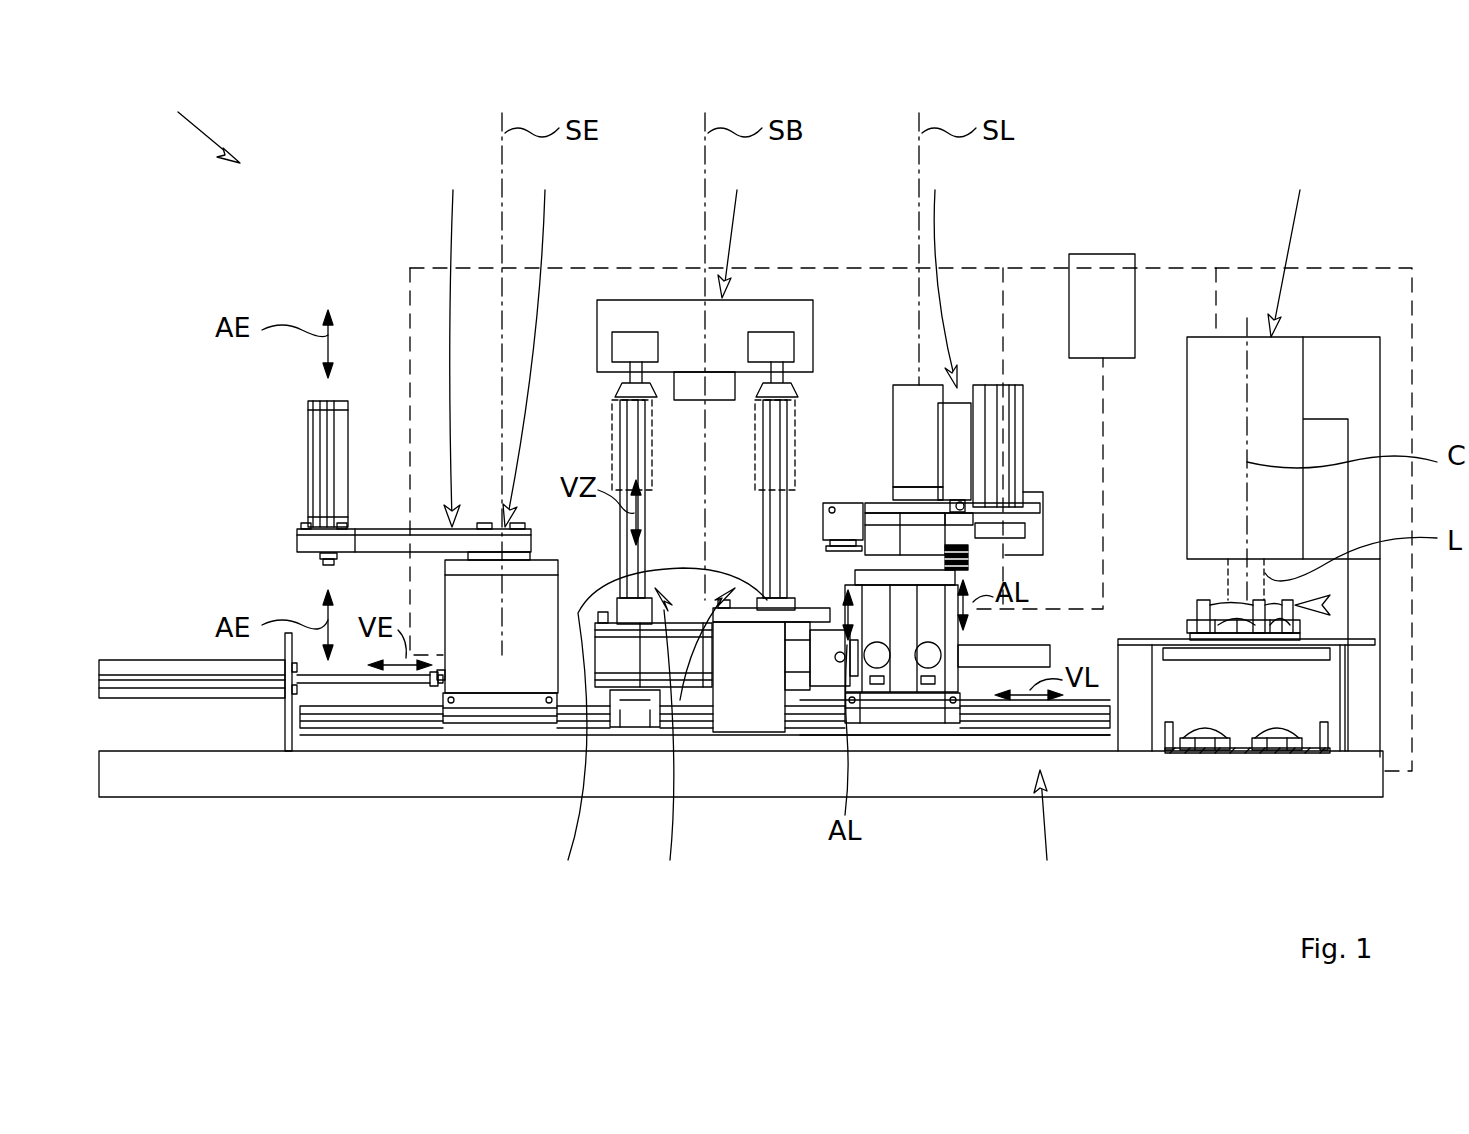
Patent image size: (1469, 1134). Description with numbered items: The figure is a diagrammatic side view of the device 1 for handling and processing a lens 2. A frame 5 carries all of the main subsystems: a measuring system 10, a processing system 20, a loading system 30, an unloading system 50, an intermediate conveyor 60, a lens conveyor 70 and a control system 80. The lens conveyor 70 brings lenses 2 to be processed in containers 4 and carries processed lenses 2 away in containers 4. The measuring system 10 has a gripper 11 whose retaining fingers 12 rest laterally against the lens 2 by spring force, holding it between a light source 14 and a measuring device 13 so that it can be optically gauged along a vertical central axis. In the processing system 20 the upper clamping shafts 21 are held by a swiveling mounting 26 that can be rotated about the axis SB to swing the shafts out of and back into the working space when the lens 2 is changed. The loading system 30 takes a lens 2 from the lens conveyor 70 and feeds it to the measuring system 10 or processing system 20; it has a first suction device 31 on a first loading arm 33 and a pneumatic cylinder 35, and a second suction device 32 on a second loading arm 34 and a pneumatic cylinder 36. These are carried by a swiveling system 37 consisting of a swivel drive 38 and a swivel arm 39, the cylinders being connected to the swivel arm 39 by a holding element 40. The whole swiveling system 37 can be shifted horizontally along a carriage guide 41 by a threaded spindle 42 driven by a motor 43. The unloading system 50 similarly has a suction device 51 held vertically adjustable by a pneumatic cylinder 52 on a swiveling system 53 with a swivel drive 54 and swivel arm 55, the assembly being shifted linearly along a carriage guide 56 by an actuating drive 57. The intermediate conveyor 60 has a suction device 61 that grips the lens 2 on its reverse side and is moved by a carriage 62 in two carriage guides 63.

The device 1 is at (200, 122).
The lens 2 is at (1290, 600).
The container 4 is at (1320, 740).
The frame 5 is at (490, 755).
The measuring system 10 is at (1297, 247).
The gripper 11 is at (1330, 600).
The retaining fingers 12 is at (1288, 618).
The measuring device 13 is at (1285, 385).
The light source 14 is at (1313, 660).
The processing system 20 is at (737, 227).
The upper clamping shafts 21 is at (628, 400).
The mounting 26 is at (680, 315).
The loading system 30 is at (938, 272).
The first suction device 31 is at (968, 560).
The second suction device 32 is at (775, 610).
The first loading arm 33 is at (975, 533).
The second loading arm 34 is at (902, 407).
The pneumatic cylinder 35 is at (1010, 432).
The pneumatic cylinder 36 is at (962, 418).
The swiveling system 37 is at (893, 700).
The swivel drive 38 is at (897, 573).
The swivel arm 39 is at (897, 533).
The holding element 40 is at (970, 390).
The carriage guide 41 is at (818, 712).
The threaded spindle 42 is at (982, 658).
The motor 43 is at (700, 655).
The unloading system 50 is at (455, 342).
The suction device 51 is at (318, 565).
The pneumatic cylinder 52 is at (313, 432).
The swiveling system 53 is at (533, 342).
The swivel drive 54 is at (542, 565).
The swivel arm 55 is at (383, 563).
The carriage guide 56 is at (383, 720).
The actuating drive 57 is at (147, 665).
The intermediate conveyor 60 is at (695, 738).
The suction device 61 is at (660, 728).
The carriage 62 is at (638, 615).
The carriage guides 63 is at (622, 465).
The lens conveyor 70 is at (1054, 829).
The control system 80 is at (1103, 275).